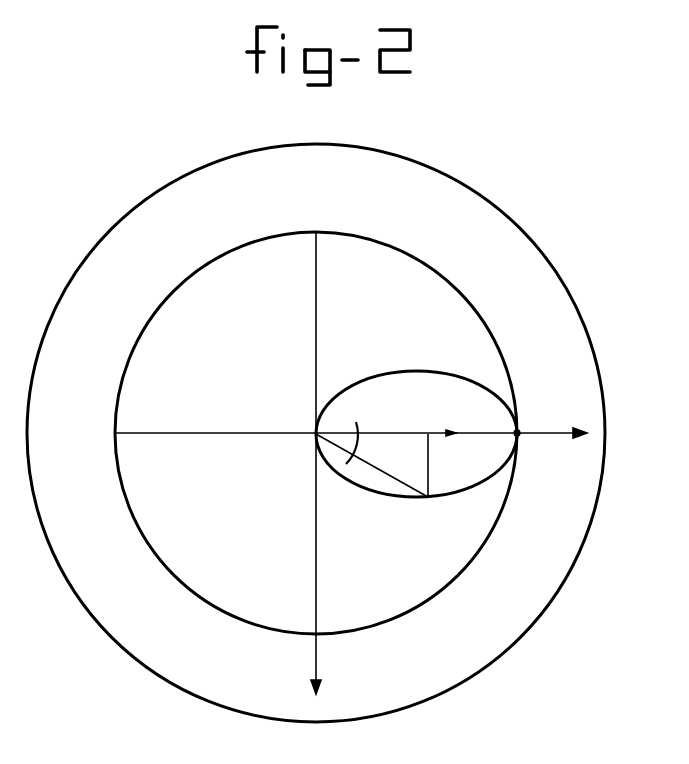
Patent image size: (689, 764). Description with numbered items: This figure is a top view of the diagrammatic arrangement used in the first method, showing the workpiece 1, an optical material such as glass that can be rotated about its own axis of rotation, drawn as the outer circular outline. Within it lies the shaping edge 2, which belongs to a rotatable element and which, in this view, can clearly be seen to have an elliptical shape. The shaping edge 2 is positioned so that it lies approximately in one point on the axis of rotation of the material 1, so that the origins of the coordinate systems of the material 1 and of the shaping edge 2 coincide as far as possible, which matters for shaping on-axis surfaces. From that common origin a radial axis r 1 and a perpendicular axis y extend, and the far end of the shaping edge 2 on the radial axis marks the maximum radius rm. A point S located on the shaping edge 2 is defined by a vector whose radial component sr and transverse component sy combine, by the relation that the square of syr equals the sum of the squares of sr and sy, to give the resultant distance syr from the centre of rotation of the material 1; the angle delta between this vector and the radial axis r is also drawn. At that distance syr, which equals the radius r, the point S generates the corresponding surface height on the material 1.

The workpiece 1 is at (462, 215).
The shaping edge 2 is at (375, 372).
The radial axis r is at (351, 445).
The y axis y is at (305, 463).
The maximum radius r_m rm is at (531, 447).
The radial displacement s_r sr is at (447, 417).
The y displacement s_y sy is at (448, 465).
The resultant displacement s_yr syr is at (372, 467).
The angle delta is at (357, 443).